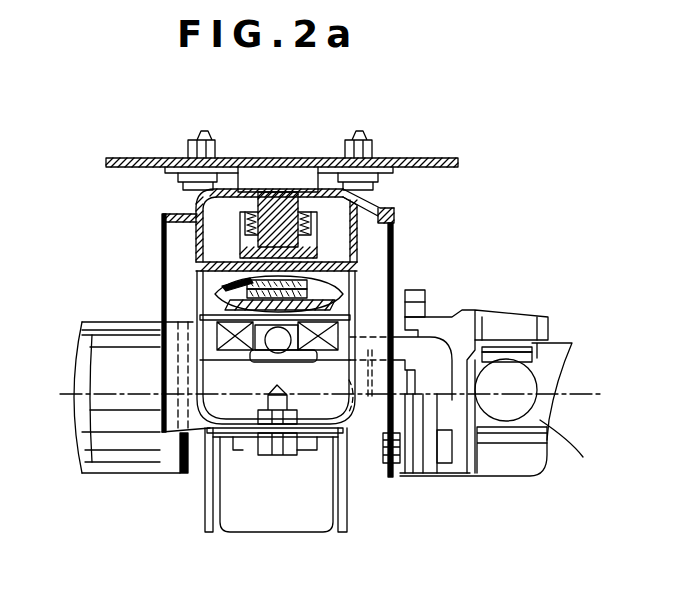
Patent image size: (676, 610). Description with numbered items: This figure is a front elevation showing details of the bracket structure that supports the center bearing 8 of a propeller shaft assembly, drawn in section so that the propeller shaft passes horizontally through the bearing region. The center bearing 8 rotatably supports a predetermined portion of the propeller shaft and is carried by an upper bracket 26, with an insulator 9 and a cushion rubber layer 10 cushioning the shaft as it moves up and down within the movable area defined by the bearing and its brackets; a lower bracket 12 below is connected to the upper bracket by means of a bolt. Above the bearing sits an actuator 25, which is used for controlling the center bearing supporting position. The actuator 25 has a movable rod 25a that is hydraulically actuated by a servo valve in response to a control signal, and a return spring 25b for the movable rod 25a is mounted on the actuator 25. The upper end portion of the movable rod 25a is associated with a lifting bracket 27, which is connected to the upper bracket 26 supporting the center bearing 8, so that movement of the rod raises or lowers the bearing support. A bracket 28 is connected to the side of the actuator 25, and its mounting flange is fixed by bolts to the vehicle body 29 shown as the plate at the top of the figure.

The center bearing 8 is at (337, 316).
The insulator 9 is at (215, 305).
The cushion rubber layer 10 is at (217, 292).
The lower bracket 12 is at (349, 512).
The actuator 25 is at (200, 240).
The movable rod 25a is at (300, 205).
The return spring 25b is at (197, 223).
The upper bracket 26 is at (383, 233).
The lifting bracket 27 is at (383, 210).
The bracket 28 is at (255, 180).
The vehicle body 29 is at (147, 158).